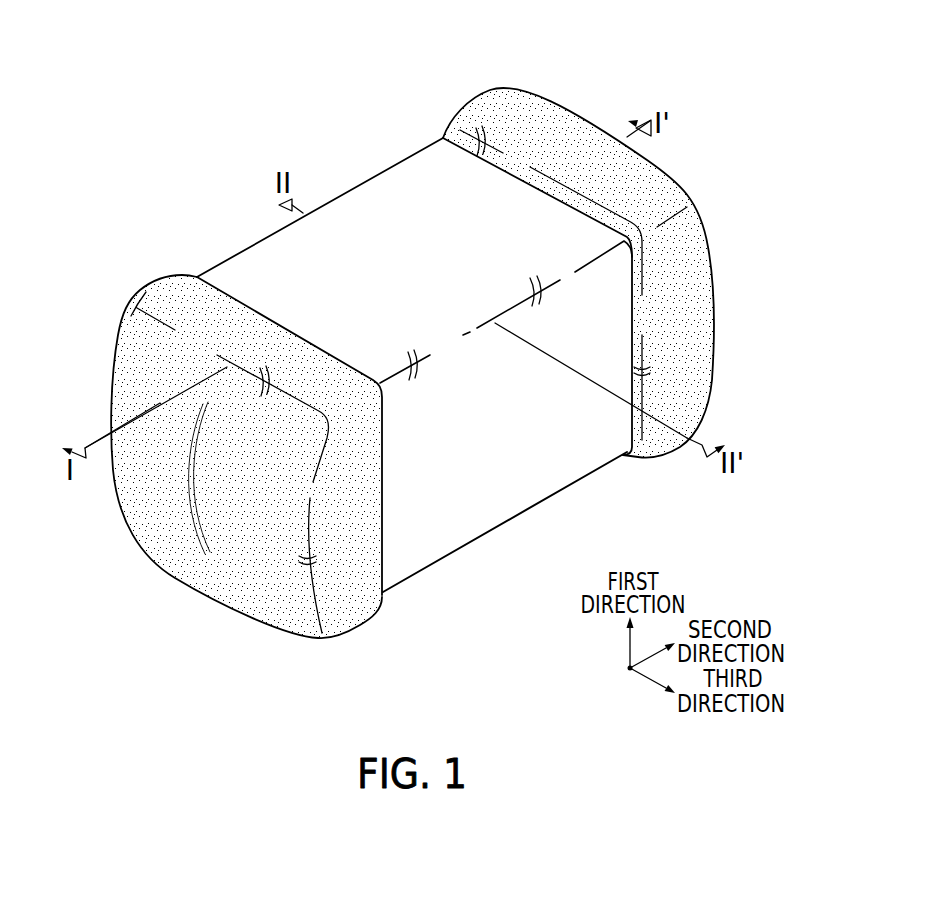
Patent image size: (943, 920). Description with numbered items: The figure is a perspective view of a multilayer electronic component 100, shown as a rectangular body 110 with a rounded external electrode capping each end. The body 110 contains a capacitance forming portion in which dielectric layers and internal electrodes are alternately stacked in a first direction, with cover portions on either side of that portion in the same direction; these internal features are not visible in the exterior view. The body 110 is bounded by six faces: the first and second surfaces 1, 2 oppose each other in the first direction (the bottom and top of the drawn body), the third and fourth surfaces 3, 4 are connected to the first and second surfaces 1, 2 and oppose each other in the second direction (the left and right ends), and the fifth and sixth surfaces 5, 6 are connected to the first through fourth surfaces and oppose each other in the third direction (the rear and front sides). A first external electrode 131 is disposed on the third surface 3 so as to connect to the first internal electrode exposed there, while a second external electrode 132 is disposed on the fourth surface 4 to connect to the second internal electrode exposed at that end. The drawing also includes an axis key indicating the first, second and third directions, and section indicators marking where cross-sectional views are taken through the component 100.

The multilayer electronic component 100 is at (291, 32).
The body 110 is at (354, 200).
The first external electrode 131 is at (164, 287).
The second external electrode 132 is at (488, 104).
The first surface 1 is at (473, 538).
The second surface 2 is at (399, 192).
The third surface 3 is at (177, 537).
The fourth surface 4 is at (567, 140).
The fifth surface 5 is at (253, 253).
The sixth surface 6 is at (525, 473).